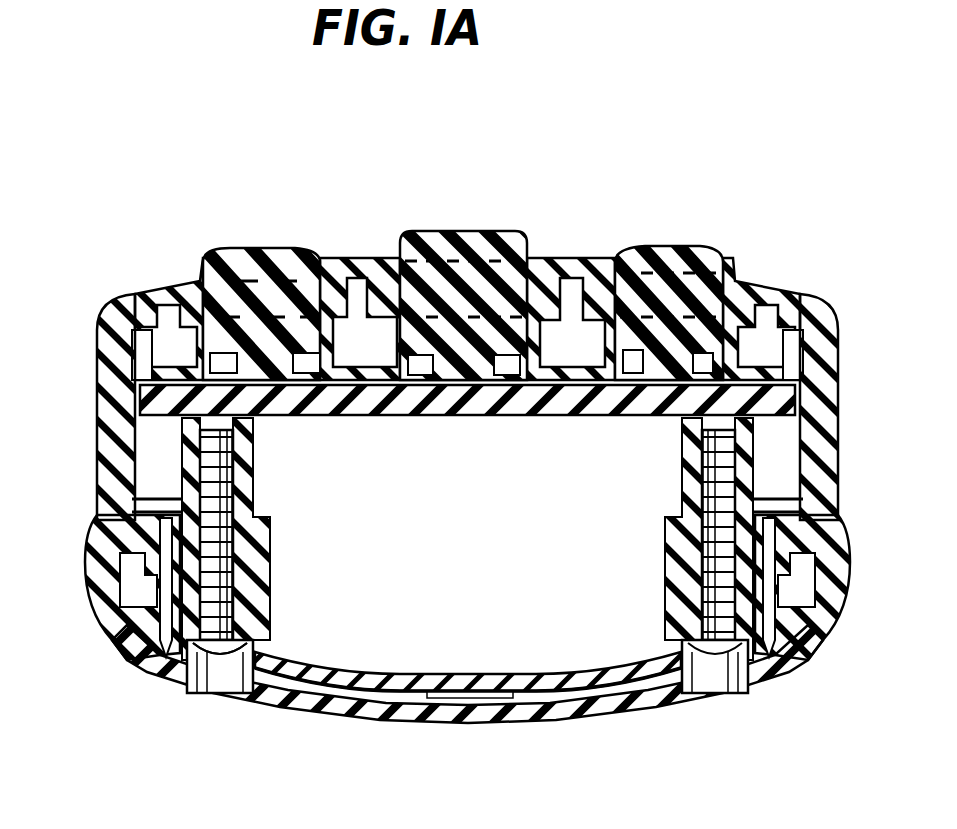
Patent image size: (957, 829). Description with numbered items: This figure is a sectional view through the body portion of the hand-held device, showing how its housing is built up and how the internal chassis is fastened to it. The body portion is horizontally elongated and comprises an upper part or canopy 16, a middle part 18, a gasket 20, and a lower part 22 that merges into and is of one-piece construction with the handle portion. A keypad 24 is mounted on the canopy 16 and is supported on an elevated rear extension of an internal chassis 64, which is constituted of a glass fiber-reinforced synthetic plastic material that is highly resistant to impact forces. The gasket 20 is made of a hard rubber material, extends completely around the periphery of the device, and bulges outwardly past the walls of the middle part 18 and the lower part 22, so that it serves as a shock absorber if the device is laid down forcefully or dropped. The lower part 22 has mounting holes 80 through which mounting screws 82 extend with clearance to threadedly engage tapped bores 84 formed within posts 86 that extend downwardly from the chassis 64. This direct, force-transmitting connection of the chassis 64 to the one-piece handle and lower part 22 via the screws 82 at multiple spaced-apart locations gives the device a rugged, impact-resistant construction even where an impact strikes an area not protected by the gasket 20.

The canopy 16 is at (809, 295).
The middle part 18 is at (100, 462).
The gasket 20 is at (88, 568).
The lower part 22 is at (145, 665).
The keypad 24 is at (621, 246).
The chassis 64 is at (472, 412).
The mounting holes 80 is at (245, 685).
The mounting screws 82 is at (253, 639).
The tapped bores 84 is at (243, 499).
The posts 86 is at (240, 464).